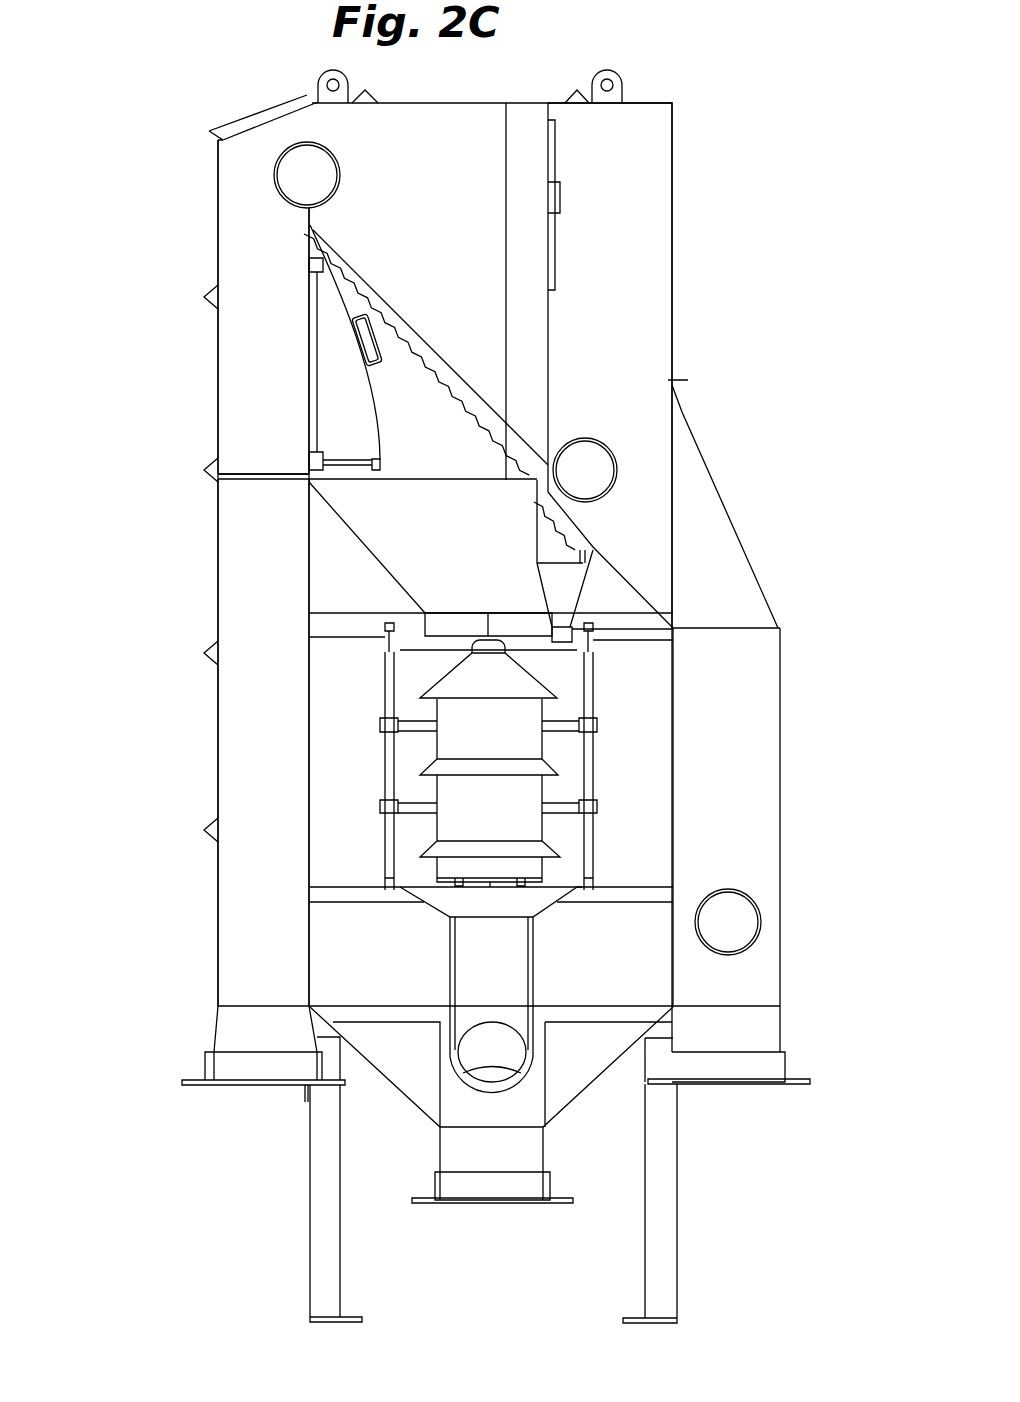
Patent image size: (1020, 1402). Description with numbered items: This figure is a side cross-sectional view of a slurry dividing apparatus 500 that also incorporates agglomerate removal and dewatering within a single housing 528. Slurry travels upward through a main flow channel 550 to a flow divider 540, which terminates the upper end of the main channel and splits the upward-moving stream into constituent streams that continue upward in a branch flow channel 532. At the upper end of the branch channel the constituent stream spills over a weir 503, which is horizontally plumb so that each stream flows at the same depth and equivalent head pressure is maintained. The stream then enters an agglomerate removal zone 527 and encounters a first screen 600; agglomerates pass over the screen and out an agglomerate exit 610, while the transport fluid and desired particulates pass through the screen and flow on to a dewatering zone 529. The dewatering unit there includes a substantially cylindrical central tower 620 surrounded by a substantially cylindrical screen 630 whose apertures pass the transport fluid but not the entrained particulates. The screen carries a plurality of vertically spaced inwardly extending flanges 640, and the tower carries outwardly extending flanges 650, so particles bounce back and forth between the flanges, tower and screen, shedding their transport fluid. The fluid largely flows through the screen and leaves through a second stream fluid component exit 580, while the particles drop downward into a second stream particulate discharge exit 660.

The slurry dividing apparatus 500 is at (153, 105).
The weir 503 is at (300, 212).
The agglomerate removal zone 527 is at (425, 418).
The housing 528 is at (667, 222).
The dewatering zone 529 is at (627, 685).
The branch flow channel 532 is at (255, 333).
The flow divider 540 is at (240, 400).
The main flow channel 550 is at (248, 945).
The second stream fluid component exit 580 is at (453, 1213).
The first screen 600 is at (420, 330).
The agglomerate exit 610 is at (710, 548).
The central tower 620 is at (445, 720).
The cylindrical screen 630 is at (398, 772).
The inwardly extending flanges 640 is at (422, 810).
The outwardly extending flanges 650 is at (530, 768).
The second stream particulate discharge exit 660 is at (495, 1022).